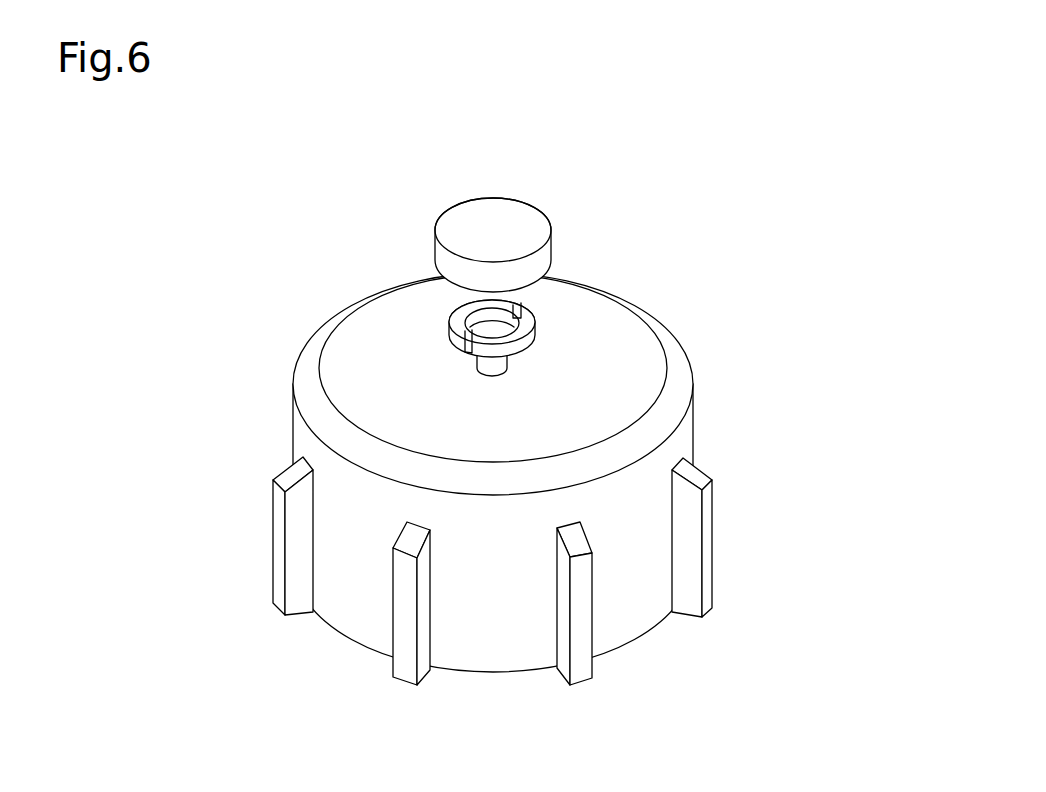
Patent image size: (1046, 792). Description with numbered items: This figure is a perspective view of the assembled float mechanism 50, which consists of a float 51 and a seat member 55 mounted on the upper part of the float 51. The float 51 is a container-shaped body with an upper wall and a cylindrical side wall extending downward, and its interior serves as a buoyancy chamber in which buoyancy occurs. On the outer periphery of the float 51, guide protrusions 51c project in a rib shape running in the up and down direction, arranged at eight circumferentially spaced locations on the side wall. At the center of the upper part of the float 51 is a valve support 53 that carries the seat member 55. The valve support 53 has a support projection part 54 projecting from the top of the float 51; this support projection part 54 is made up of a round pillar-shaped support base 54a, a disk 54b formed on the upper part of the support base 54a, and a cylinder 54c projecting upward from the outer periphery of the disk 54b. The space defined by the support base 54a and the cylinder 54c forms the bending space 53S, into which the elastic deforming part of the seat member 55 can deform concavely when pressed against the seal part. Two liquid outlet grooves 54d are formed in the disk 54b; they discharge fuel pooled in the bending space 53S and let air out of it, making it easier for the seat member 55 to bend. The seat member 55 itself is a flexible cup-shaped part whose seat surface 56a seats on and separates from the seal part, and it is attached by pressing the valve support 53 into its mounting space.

The float mechanism 50 is at (861, 179).
The float 51 is at (693, 433).
The guide protrusions 51c is at (682, 535).
The valve support 53 is at (837, 233).
The bending space 53S is at (522, 310).
The support projection part 54 is at (772, 280).
The support base 54a is at (500, 364).
The disk 54b is at (538, 340).
The cylinder 54c is at (528, 318).
The liquid outlet grooves 54d is at (465, 345).
The seat member 55 is at (552, 238).
The seat surface 56a is at (500, 225).